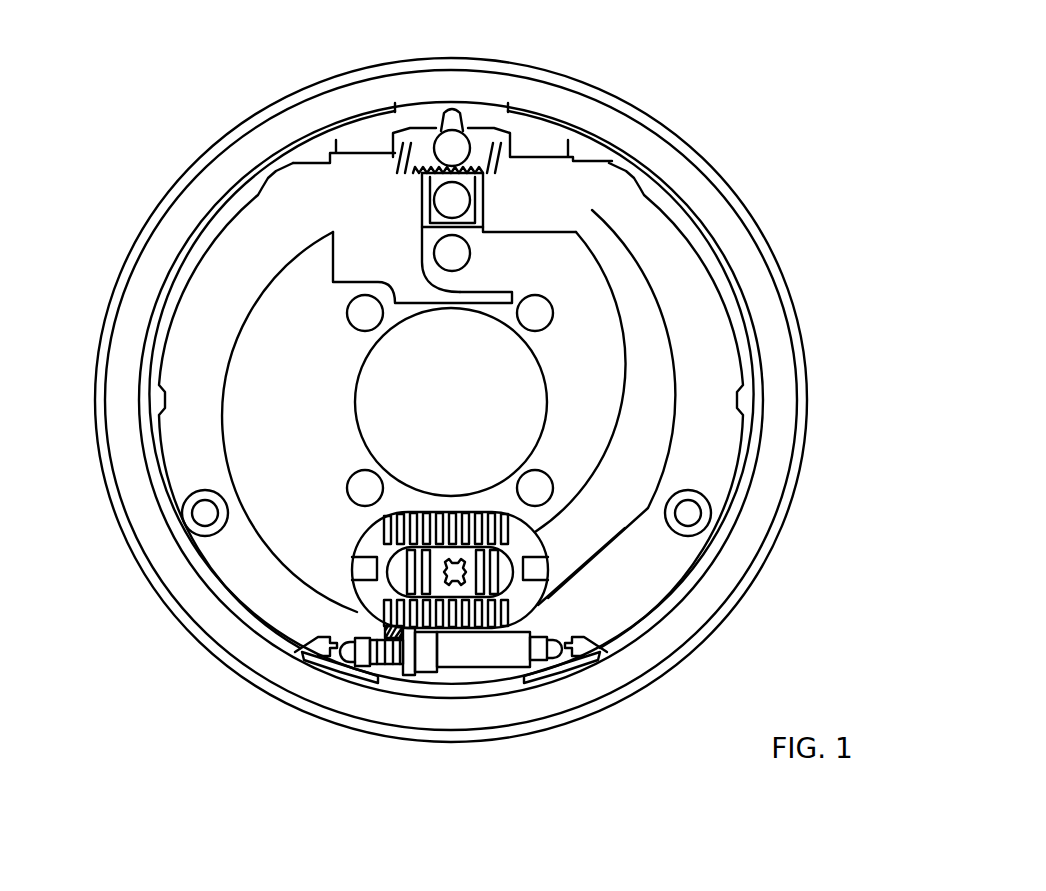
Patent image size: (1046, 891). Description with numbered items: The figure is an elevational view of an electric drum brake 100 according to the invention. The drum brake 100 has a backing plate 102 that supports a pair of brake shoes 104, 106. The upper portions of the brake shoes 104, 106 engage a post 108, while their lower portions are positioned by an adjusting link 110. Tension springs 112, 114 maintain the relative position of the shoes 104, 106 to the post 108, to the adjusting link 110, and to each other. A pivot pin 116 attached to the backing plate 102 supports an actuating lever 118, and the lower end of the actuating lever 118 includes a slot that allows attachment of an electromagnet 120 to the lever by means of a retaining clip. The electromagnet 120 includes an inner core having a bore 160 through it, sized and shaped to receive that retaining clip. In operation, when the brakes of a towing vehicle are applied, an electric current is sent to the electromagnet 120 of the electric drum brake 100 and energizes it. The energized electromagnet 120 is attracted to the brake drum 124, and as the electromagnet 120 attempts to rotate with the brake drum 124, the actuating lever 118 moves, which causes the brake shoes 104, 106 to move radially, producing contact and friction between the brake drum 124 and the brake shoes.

The electric drum brake 100 is at (688, 56).
The backing plate 102 is at (518, 350).
The brake shoe 104 is at (722, 348).
The brake shoe 106 is at (180, 348).
The post 108 is at (484, 126).
The adjusting link 110 is at (506, 682).
The tension spring 112 is at (570, 180).
The tension spring 114 is at (362, 620).
The pivot pin 116 is at (434, 234).
The actuating lever 118 is at (560, 245).
The electromagnet 120 is at (568, 583).
The brake drum 124 is at (178, 236).
The bore 160 is at (461, 600).